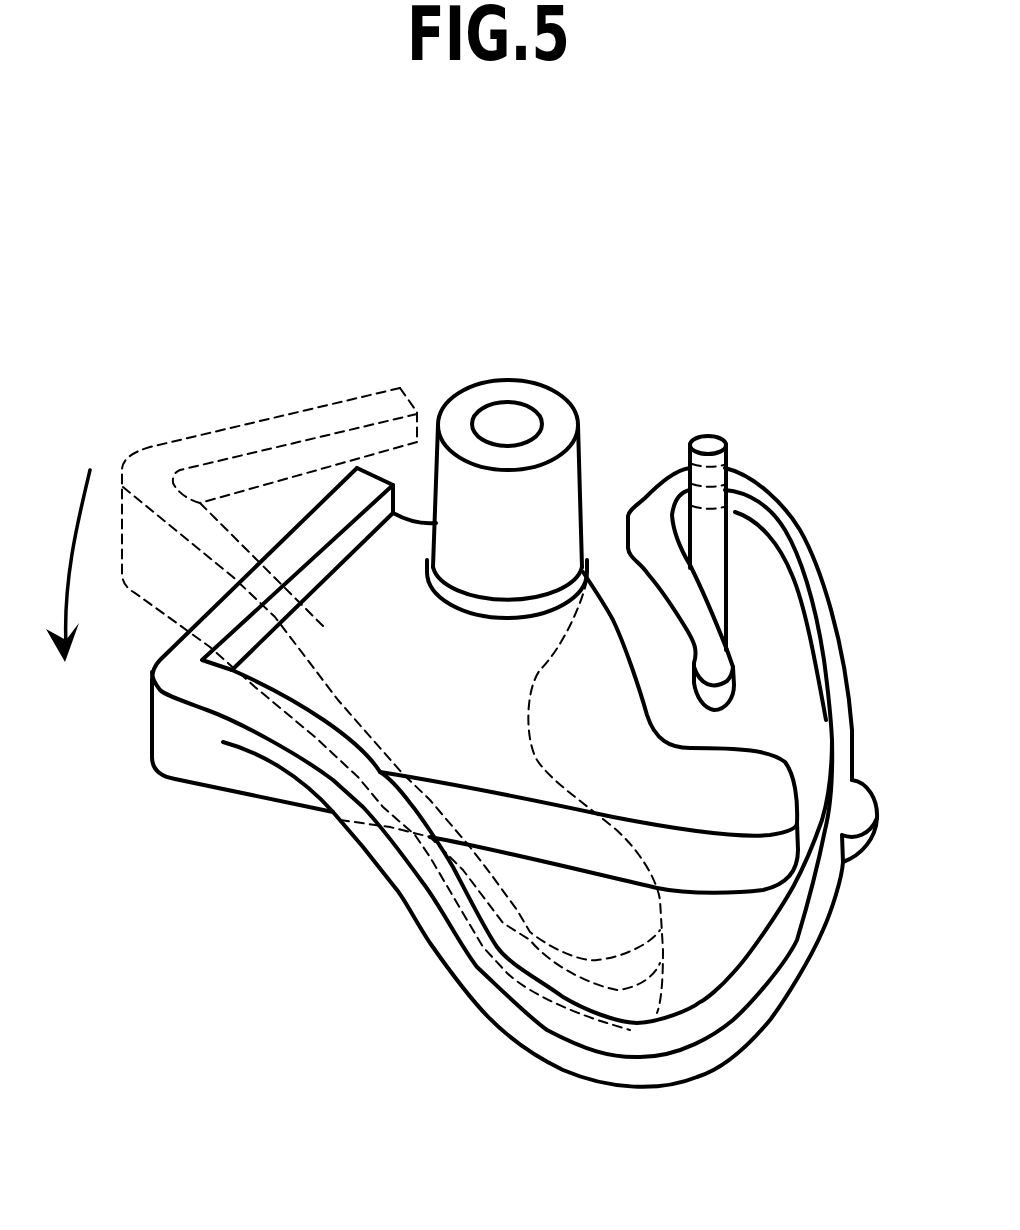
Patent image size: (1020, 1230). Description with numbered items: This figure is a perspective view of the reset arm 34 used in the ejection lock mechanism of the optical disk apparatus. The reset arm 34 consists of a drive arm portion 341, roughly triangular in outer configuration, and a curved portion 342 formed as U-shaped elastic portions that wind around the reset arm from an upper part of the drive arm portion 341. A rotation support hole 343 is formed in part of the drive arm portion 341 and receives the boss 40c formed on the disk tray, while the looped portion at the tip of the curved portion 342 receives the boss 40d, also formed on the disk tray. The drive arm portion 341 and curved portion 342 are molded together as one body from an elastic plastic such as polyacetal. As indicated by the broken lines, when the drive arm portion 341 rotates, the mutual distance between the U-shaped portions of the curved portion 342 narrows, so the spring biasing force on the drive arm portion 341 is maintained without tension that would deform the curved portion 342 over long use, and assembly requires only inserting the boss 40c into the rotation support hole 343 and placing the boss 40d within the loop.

The reset arm 34 is at (635, 410).
The drive arm portion 341 is at (487, 733).
The curved portion 342 is at (755, 980).
The rotation support hole 343 is at (487, 502).
The boss 40c is at (507, 422).
The boss 40d is at (707, 537).